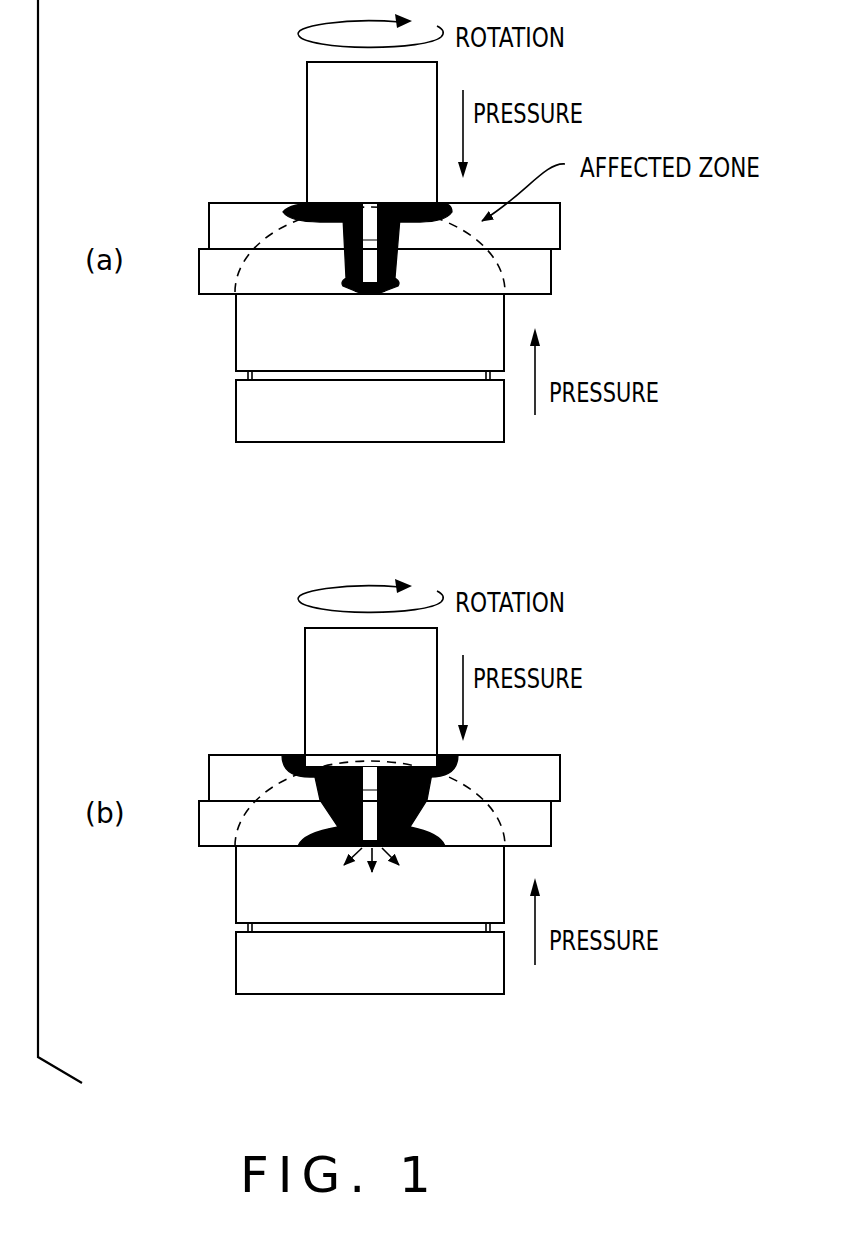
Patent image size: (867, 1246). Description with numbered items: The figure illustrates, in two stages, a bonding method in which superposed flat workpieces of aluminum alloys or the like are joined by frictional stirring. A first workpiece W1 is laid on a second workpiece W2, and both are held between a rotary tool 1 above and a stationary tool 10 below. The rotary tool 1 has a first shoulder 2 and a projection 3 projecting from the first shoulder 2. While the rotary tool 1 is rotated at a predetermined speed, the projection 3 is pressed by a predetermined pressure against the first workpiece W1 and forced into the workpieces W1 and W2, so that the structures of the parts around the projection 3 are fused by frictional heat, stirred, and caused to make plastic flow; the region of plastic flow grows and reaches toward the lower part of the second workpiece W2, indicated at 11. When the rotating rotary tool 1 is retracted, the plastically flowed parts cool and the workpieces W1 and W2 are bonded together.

The rotary tool 1 is at (307, 128).
The first shoulder 2 is at (328, 203).
The projection 3 is at (337, 237).
The stationary tool 10 is at (236, 333).
The lower end of stirred region 11 is at (370, 293).
The first workpiece W1 is at (560, 226).
The second workpiece W2 is at (551, 273).